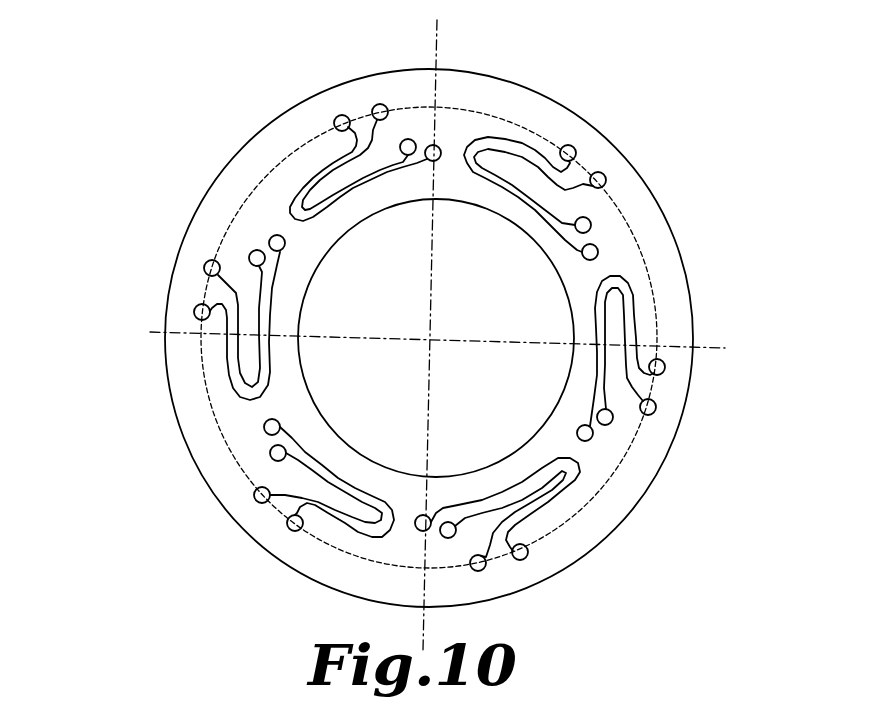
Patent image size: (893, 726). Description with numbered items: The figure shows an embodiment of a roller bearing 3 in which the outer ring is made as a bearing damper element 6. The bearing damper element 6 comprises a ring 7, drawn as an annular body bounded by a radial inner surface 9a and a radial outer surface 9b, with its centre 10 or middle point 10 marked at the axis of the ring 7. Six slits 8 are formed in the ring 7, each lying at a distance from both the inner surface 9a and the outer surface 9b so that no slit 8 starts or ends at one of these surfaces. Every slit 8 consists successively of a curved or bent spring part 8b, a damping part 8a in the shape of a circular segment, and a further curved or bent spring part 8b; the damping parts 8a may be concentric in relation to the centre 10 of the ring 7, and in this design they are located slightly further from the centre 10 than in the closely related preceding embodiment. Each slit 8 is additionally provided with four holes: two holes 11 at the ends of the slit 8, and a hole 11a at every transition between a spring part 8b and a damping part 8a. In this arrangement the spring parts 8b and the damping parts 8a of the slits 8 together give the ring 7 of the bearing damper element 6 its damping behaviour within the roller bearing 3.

The roller bearing 3 is at (724, 149).
The bearing damper element 6 is at (117, 127).
The ring 7 is at (421, 335).
The slit 8 is at (432, 294).
The damping part 8a is at (493, 112).
The spring part 8b is at (303, 172).
The radial inner surface 9a is at (436, 338).
The radial outer surface 9b is at (421, 338).
The centre 10 is at (395, 335).
The hole 11 is at (393, 337).
The hole 11a is at (371, 359).